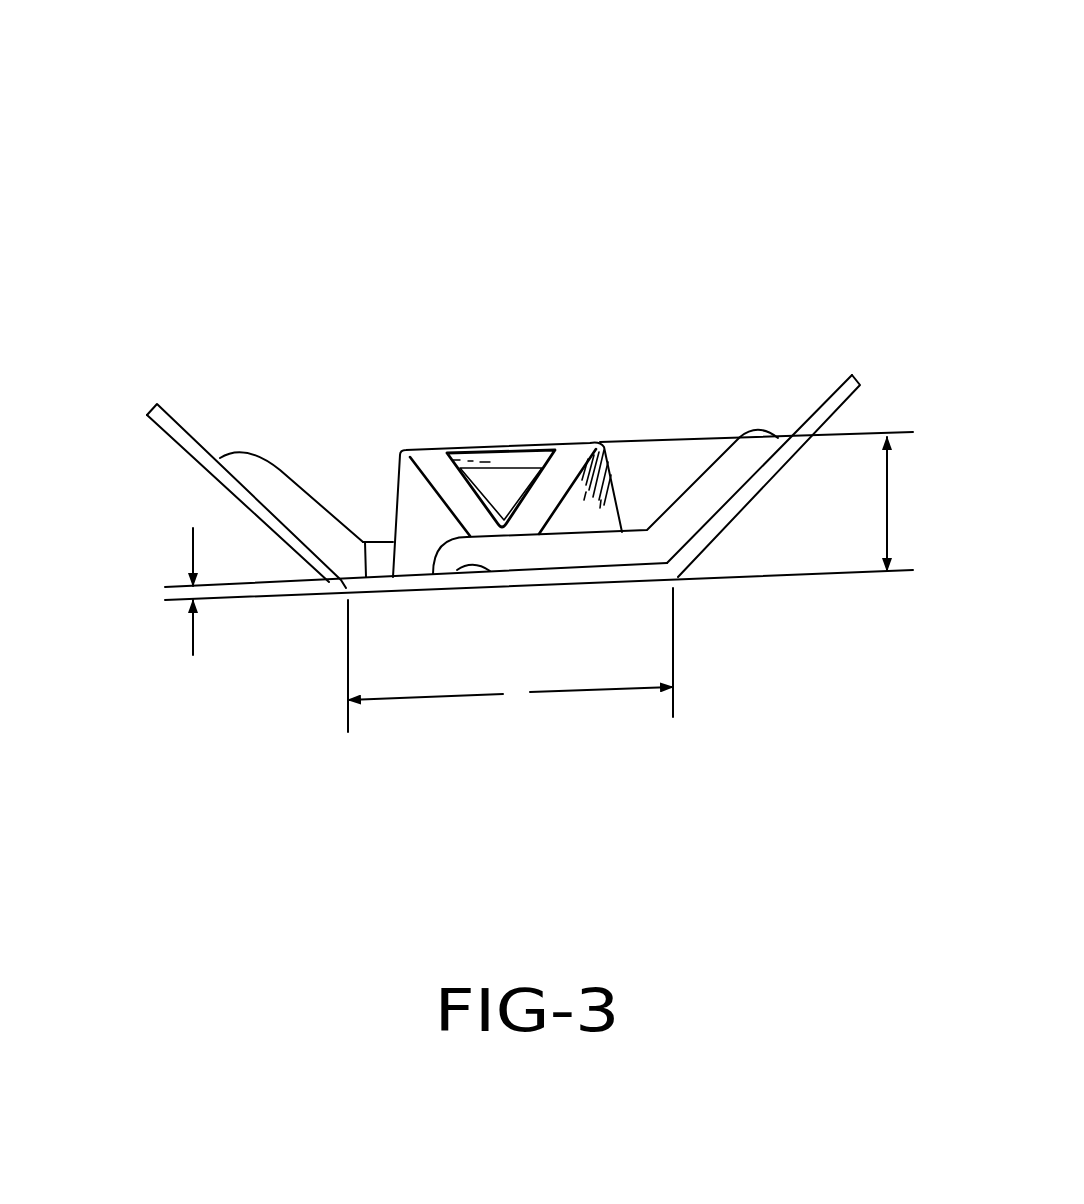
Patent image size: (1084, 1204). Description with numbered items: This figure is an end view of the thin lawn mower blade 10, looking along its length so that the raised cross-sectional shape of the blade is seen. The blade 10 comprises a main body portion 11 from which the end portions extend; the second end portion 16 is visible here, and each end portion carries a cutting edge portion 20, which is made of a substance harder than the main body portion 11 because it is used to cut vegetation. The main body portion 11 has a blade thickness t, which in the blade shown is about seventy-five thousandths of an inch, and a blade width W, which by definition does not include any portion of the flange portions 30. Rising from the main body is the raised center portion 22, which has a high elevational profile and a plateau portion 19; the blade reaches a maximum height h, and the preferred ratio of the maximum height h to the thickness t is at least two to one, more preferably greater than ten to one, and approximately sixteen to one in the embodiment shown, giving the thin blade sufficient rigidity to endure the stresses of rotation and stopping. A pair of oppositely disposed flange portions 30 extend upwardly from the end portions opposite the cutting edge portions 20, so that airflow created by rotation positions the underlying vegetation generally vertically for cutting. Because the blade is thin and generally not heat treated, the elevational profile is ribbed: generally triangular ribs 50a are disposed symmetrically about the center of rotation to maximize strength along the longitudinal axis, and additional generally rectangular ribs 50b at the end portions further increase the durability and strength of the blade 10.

The thin lawn mower blade 10 is at (657, 240).
The main body portion 11 is at (365, 543).
The second end portion 16 is at (505, 572).
The plateau portion 19 is at (472, 437).
The cutting edge portion 20 is at (340, 593).
The raised center portion 22 is at (418, 425).
The flange portion 30 is at (165, 410).
The triangular rib 50a is at (508, 472).
The rectangular rib 50b is at (255, 463).
The maximum blade height h is at (887, 498).
The blade thickness t is at (193, 655).
The blade width W is at (510, 660).